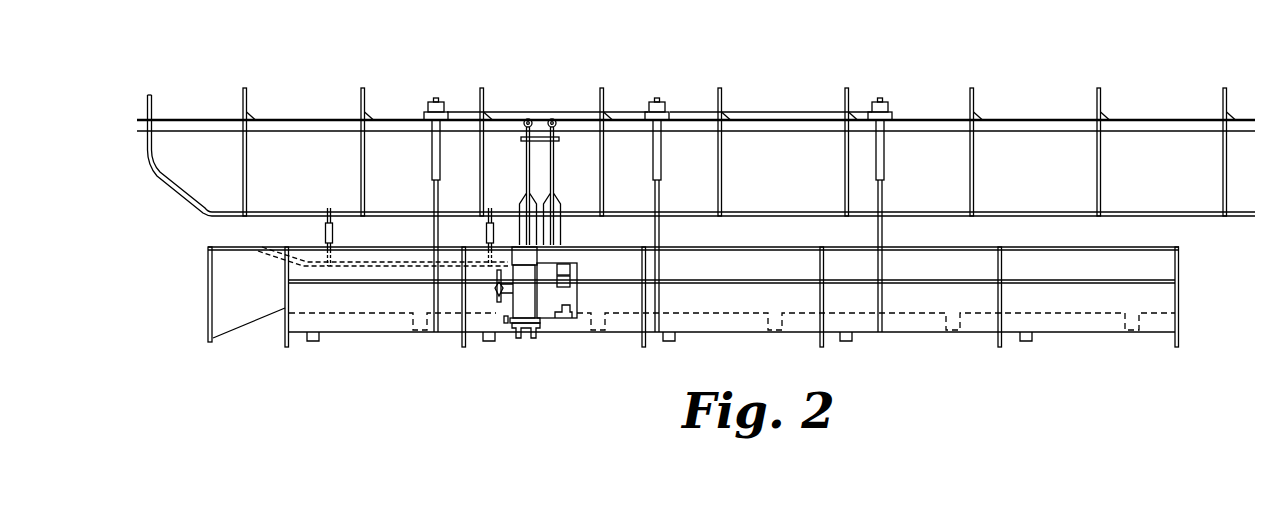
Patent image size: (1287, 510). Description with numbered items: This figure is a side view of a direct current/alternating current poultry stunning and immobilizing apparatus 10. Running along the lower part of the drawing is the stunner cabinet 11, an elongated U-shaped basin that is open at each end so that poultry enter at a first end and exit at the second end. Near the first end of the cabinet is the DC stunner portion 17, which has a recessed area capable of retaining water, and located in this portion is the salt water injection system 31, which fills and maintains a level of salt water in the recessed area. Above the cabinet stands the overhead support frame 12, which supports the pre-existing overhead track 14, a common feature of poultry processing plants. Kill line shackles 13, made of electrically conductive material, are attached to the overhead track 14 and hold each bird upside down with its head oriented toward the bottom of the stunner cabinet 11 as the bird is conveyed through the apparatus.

The poultry stunning and immobilizing apparatus 10 is at (1048, 50).
The stunner cabinet 11 is at (1192, 286).
The overhead support frame 12 is at (780, 97).
The kill line shackles 13 is at (566, 178).
The overhead track 14 is at (1163, 126).
The DC stunner portion 17 is at (569, 365).
The salt water injection system 31 is at (497, 318).